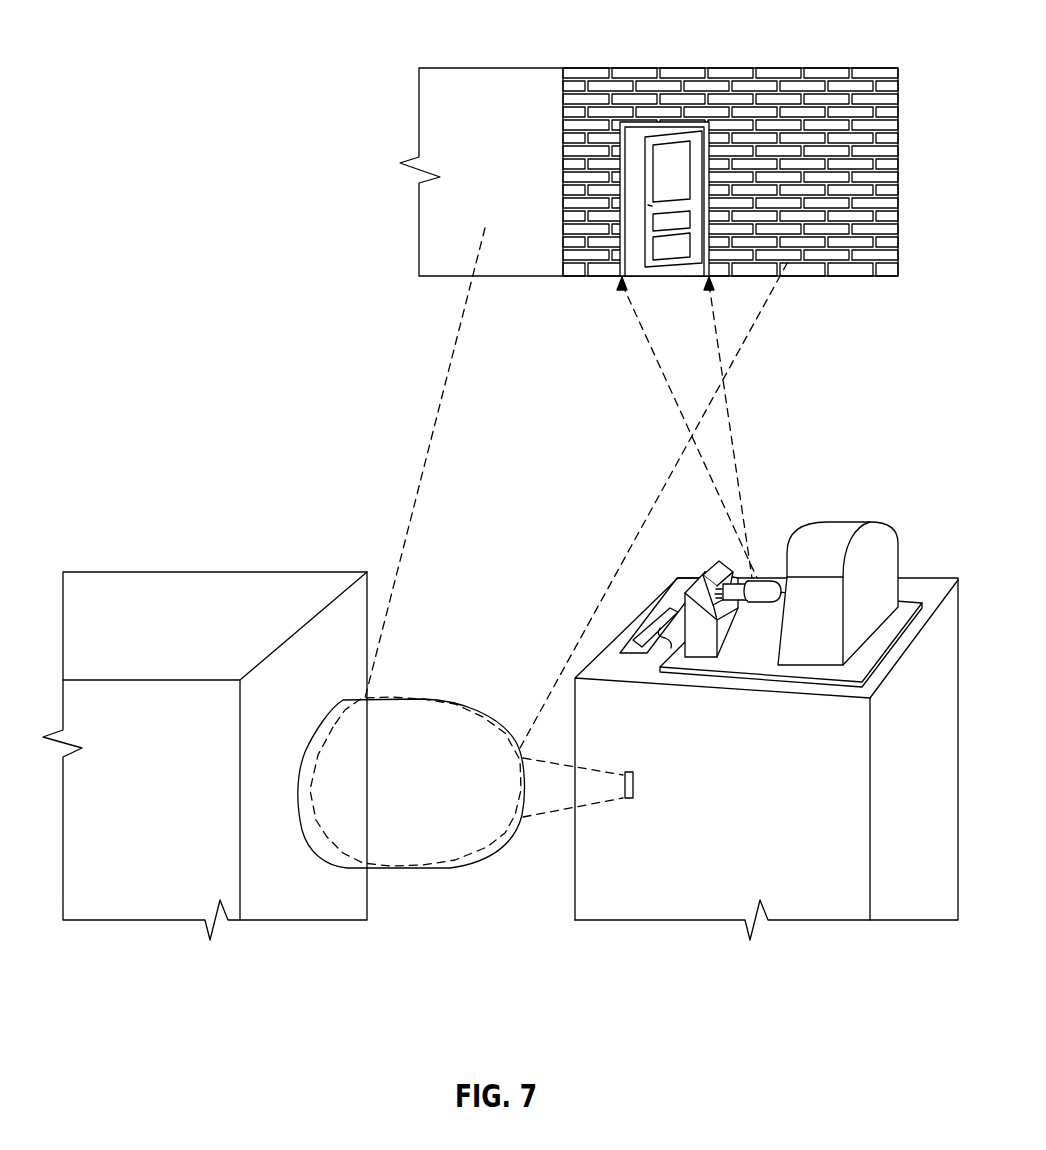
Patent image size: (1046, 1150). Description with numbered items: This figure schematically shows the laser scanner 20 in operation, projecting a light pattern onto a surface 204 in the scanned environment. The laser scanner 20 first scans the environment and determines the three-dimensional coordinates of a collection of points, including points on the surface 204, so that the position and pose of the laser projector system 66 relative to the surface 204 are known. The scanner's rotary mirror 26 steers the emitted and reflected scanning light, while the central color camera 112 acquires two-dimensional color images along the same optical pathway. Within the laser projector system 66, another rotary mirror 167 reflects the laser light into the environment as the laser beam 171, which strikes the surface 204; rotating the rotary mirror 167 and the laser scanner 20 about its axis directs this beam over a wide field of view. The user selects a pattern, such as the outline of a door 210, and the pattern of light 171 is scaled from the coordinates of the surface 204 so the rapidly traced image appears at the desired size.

The surface 204 is at (493, 120).
The door 210 is at (690, 122).
The laser scanner 20 is at (243, 525).
The rotary mirror 26 is at (405, 867).
The laser projector system 66 is at (867, 511).
The rotary mirror 167 is at (760, 578).
The laser beam 171 is at (730, 403).
The central color camera 112 is at (628, 800).